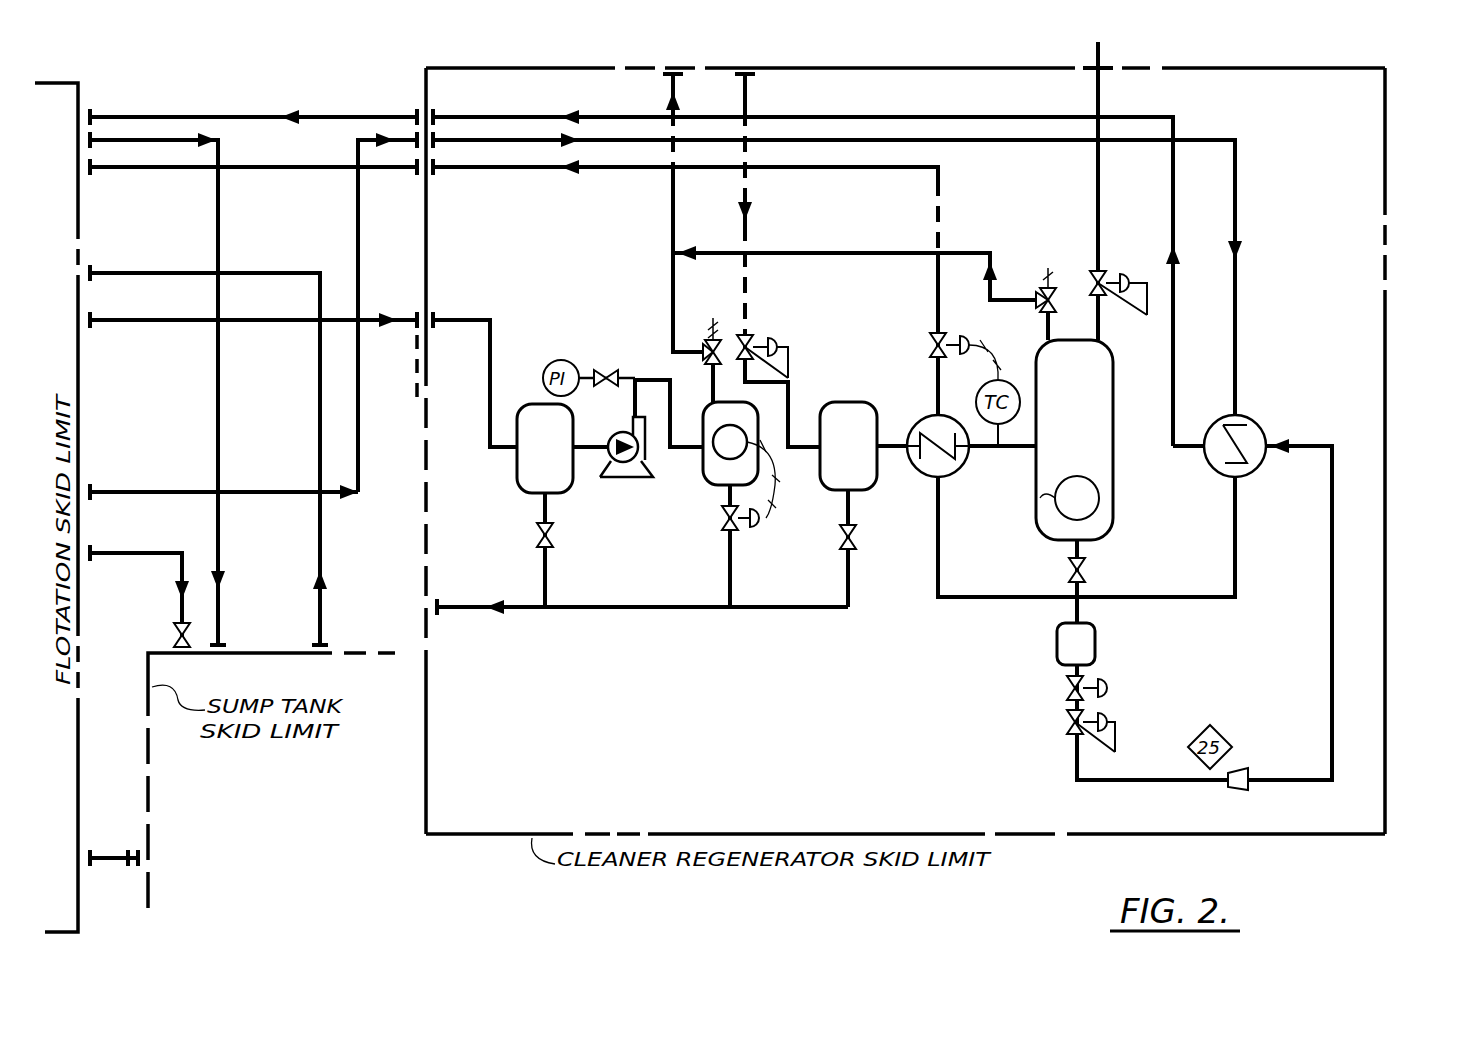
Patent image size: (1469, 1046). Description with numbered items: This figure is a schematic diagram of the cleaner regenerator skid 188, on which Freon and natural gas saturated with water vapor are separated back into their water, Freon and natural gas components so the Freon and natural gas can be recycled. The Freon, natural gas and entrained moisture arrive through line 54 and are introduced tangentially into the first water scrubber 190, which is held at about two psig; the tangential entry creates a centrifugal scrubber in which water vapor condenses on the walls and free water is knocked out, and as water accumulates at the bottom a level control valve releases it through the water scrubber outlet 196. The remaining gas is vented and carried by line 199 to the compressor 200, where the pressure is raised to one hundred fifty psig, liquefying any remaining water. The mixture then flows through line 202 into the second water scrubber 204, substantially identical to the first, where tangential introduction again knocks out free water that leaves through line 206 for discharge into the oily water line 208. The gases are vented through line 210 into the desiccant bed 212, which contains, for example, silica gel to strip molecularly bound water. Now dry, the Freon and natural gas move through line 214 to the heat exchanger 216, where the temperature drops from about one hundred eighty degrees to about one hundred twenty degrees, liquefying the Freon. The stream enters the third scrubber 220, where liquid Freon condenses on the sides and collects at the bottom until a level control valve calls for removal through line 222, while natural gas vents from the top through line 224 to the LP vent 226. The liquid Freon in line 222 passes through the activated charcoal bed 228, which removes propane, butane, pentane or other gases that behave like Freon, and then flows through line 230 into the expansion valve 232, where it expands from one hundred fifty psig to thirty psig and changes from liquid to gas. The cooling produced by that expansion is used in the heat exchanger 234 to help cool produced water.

The line 54 is at (140, 322).
The cleaner regenerator skid 188 is at (1400, 390).
The first water scrubber 190 is at (535, 420).
The water scrubber outlet 196 is at (548, 508).
The line 199 is at (630, 418).
The compressor 200 is at (648, 458).
The line 202 is at (668, 380).
The second water scrubber 204 is at (722, 475).
The line 206 is at (732, 562).
The oily water line 208 is at (622, 610).
The line 210 is at (790, 388).
The desiccant bed 212 is at (860, 425).
The line 214 is at (882, 452).
The heat exchanger 216 is at (953, 466).
The third scrubber 220 is at (1085, 390).
The line 222 is at (1082, 548).
The line 224 is at (1098, 238).
The LP vent 226 is at (1091, 43).
The activated charcoal bed 228 is at (1082, 648).
The line 230 is at (1125, 782).
The expansion valve 232 is at (1240, 773).
The heat exchanger 234 is at (1262, 425).